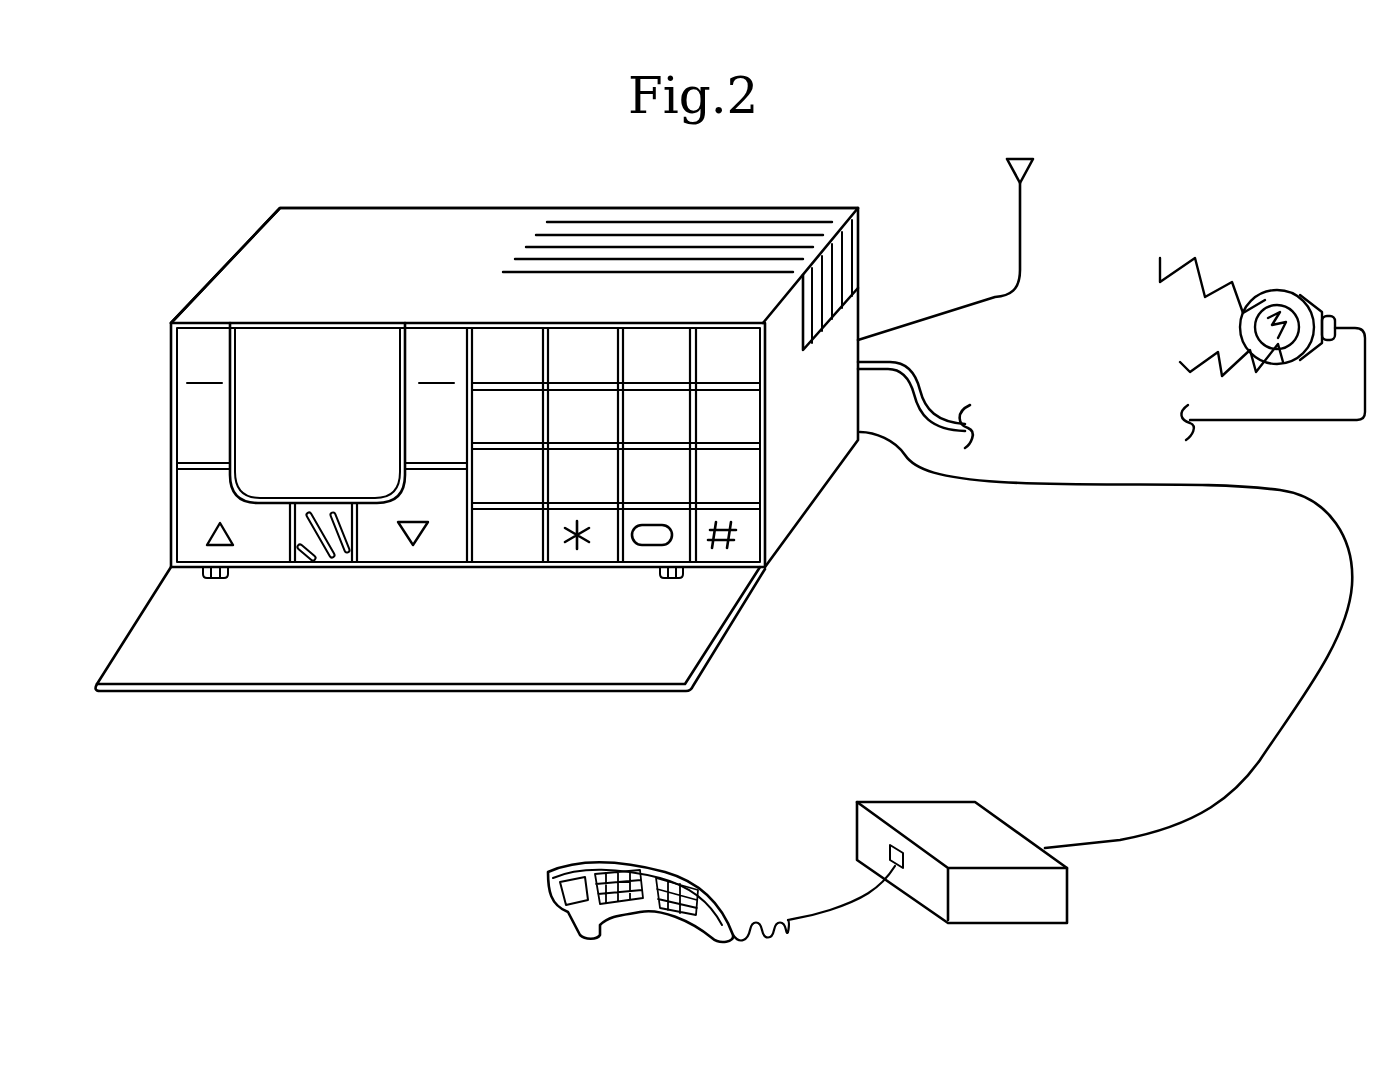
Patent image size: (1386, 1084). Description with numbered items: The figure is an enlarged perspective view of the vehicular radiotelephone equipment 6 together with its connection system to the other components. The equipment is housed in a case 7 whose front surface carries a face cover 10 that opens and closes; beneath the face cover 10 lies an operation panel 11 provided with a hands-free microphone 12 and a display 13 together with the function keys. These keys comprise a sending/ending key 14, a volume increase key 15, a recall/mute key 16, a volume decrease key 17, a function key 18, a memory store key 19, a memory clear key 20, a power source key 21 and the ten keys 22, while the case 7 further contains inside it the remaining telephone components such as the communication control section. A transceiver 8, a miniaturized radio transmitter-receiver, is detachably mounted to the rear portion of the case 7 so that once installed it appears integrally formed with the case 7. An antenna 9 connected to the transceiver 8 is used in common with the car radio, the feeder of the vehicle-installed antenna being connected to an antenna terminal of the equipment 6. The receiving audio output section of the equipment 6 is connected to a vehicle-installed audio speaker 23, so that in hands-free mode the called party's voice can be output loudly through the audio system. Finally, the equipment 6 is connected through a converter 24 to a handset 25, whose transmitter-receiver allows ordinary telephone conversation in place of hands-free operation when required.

The vehicular radiotelephone equipment 6 is at (165, 346).
The case 7 is at (272, 236).
The transceiver 8 is at (677, 243).
The antenna 9 is at (1021, 222).
The face cover 10 is at (690, 652).
The operation panel 11 is at (760, 560).
The hands-free microphone 12 is at (295, 518).
The display 13 is at (277, 345).
The sending/ending key 14 is at (181, 385).
The volume increase key 15 is at (190, 535).
The recall/mute key 16 is at (440, 337).
The volume decrease key 17 is at (432, 540).
The function key 18 is at (512, 338).
The memory store key 19 is at (530, 400).
The memory clear key 20 is at (490, 490).
The power source key 21 is at (522, 560).
The ten keys 22 is at (749, 481).
The vehicle-installed audio speaker 23 is at (1280, 300).
The converter 24 is at (985, 830).
The handset 25 is at (645, 878).